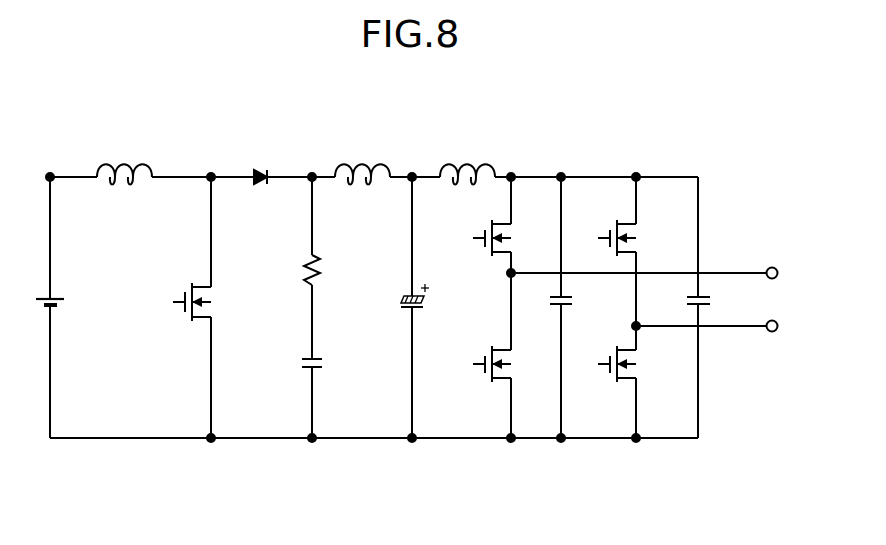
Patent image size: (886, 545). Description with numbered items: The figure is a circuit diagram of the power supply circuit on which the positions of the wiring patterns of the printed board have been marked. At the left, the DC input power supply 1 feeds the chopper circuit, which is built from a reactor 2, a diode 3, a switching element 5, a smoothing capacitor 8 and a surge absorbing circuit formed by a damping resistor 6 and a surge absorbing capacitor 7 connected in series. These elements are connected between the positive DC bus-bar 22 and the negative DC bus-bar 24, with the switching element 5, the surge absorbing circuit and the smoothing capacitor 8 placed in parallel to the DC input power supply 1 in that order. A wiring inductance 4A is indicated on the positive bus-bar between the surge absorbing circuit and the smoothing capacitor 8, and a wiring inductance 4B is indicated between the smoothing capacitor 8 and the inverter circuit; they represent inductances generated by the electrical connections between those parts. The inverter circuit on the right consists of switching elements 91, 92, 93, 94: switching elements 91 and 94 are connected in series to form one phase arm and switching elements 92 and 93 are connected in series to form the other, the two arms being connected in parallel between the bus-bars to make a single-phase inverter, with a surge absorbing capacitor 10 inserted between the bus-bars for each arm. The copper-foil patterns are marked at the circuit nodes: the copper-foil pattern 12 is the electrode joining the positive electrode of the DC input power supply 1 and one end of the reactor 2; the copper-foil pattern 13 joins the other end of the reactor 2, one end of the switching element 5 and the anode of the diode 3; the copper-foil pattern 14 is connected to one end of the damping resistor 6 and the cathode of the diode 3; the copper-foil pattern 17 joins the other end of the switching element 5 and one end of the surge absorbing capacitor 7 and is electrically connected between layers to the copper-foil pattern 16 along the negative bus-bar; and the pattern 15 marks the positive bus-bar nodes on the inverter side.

The DC input power supply 1 is at (63, 298).
The reactor 2 is at (143, 163).
The diode 3 is at (258, 168).
The wiring inductance 4A is at (368, 163).
The wiring inductance 4B is at (468, 163).
The switching element 5 is at (212, 302).
The damping resistor 6 is at (322, 268).
The surge absorbing capacitor 7 is at (322, 368).
The smoothing capacitor 8 is at (425, 298).
The surge absorbing capacitor 10 is at (573, 308).
The copper-foil pattern 12 is at (50, 174).
The copper-foil pattern 13 is at (211, 174).
The copper-foil pattern 14 is at (312, 174).
The node / high-side line 15 is at (412, 175).
The copper-foil pattern 16 is at (372, 440).
The copper-foil pattern 17 is at (214, 434).
The DC bus-bar 22 is at (176, 158).
The DC bus-bar 24 is at (137, 455).
The switching element 91 is at (514, 243).
The switching element 92 is at (638, 365).
The switching element 93 is at (639, 243).
The switching element 94 is at (513, 365).